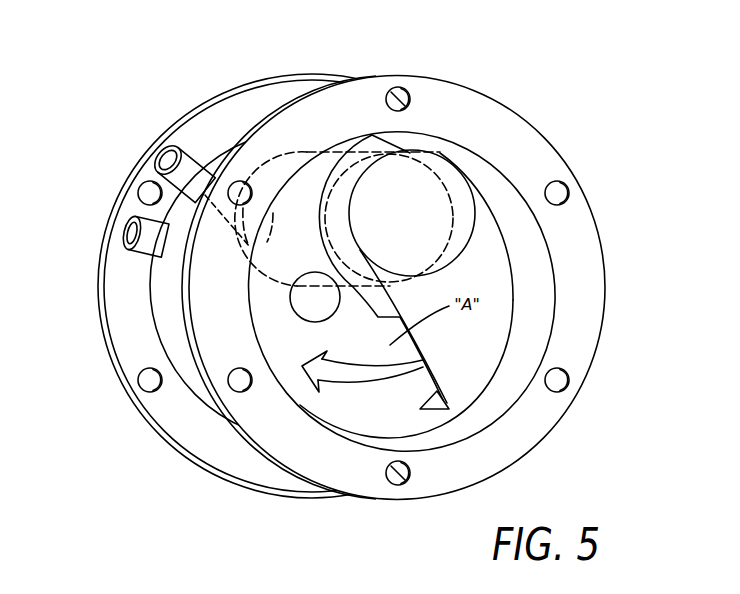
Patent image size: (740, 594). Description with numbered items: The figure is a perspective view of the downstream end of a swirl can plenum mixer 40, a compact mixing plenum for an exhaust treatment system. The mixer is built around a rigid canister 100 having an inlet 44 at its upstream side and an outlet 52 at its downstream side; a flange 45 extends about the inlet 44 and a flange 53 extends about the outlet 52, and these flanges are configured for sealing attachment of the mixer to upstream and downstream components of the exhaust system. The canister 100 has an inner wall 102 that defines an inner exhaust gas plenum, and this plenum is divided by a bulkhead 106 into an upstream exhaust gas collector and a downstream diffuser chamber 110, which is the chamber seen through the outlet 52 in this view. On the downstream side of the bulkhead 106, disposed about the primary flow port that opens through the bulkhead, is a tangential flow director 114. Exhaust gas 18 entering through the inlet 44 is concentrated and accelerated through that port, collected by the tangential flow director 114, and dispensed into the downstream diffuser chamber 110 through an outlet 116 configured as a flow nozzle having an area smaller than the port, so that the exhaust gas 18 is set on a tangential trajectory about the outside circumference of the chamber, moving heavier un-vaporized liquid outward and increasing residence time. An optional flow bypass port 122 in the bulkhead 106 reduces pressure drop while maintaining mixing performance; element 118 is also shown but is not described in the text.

The swirl can plenum mixer 40 is at (597, 158).
The inlet 44 is at (152, 280).
The flange 45 is at (190, 127).
The canister 100 is at (168, 310).
The inner wall 102 is at (481, 400).
The bulkhead 106 is at (287, 343).
The downstream diffuser chamber 110 is at (331, 349).
The tangential flow director 114 is at (478, 268).
The outlet 116 is at (414, 392).
The locating pin 118 is at (177, 168).
The flow bypass port 122 is at (320, 300).
The exhaust gas 18 is at (367, 379).
The outlet 52 is at (299, 389).
The flange 53 is at (300, 440).